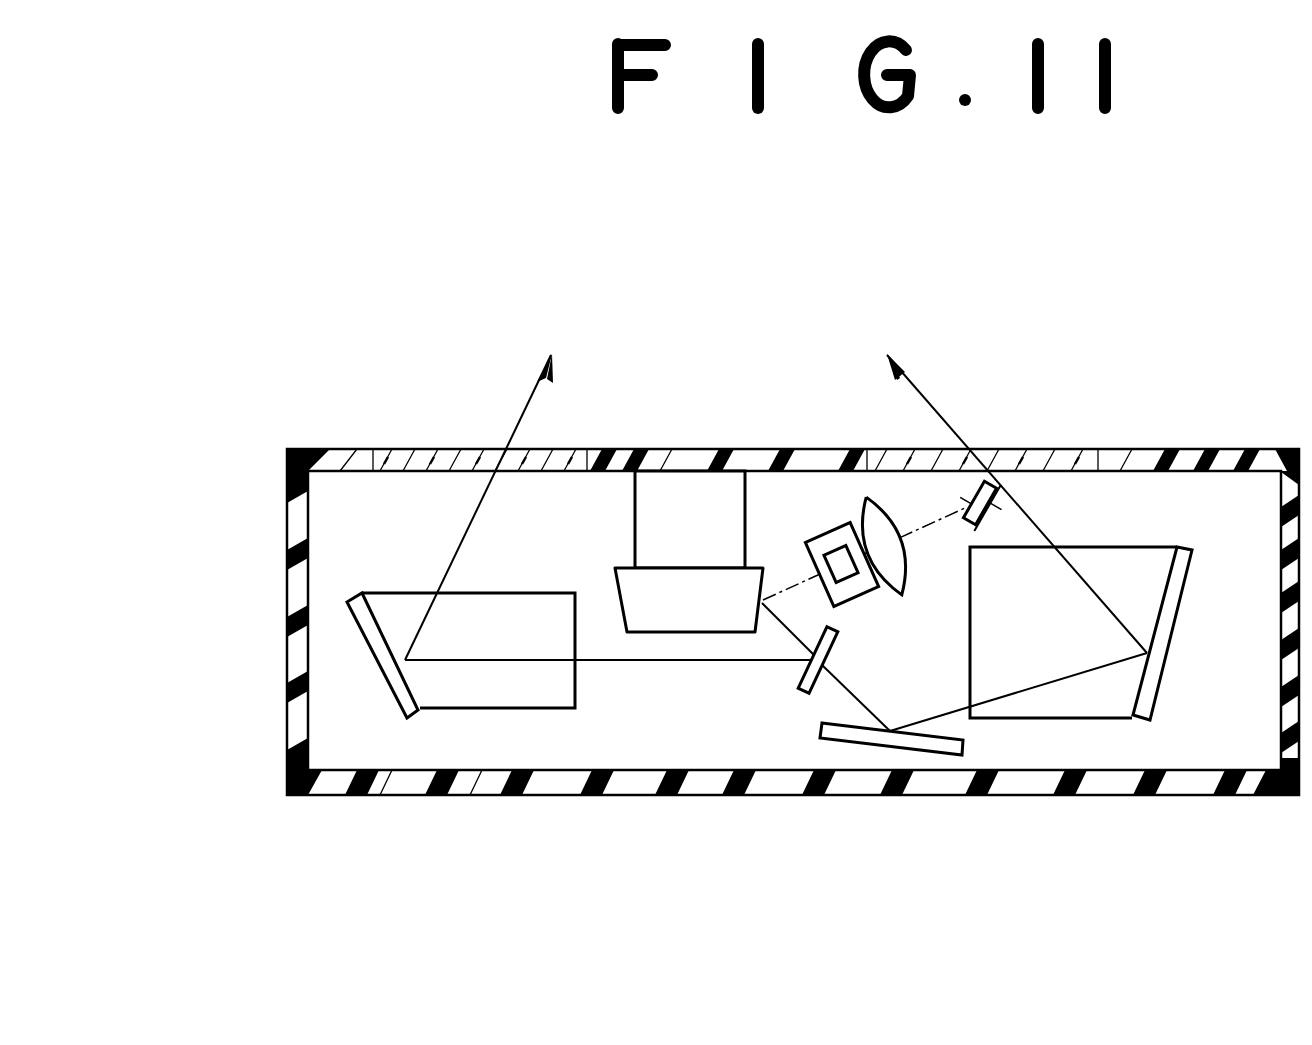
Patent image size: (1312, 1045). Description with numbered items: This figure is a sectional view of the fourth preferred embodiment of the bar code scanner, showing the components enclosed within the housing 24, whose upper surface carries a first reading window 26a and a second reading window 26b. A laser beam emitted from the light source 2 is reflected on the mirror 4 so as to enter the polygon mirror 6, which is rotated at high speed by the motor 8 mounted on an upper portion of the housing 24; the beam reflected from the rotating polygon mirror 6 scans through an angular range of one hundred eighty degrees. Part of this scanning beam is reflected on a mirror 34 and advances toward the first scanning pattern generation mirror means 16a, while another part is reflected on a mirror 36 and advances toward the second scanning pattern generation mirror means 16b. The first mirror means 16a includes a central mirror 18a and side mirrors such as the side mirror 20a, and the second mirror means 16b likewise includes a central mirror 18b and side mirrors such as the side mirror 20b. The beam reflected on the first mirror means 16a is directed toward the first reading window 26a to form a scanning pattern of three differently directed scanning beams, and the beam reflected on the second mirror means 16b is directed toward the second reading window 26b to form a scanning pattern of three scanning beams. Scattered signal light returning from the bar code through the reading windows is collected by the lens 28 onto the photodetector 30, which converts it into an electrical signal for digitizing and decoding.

The light source 2 is at (827, 590).
The mirror 4 is at (847, 604).
The polygon mirror 6 is at (619, 590).
The motor 8 is at (635, 516).
The first scanning pattern generation mirror means 16a is at (1201, 714).
The second scanning pattern generation mirror means 16b is at (299, 675).
The central mirror 18a is at (1160, 655).
The central mirror 18b is at (380, 692).
The side mirror 20a is at (1082, 718).
The side mirror 20b is at (483, 710).
The housing 24 is at (290, 563).
The first reading window 26a is at (1018, 448).
The second reading window 26b is at (410, 452).
The lens 28 is at (862, 496).
The photodetector 30 is at (970, 515).
The mirror 34 is at (880, 755).
The mirror 36 is at (808, 692).